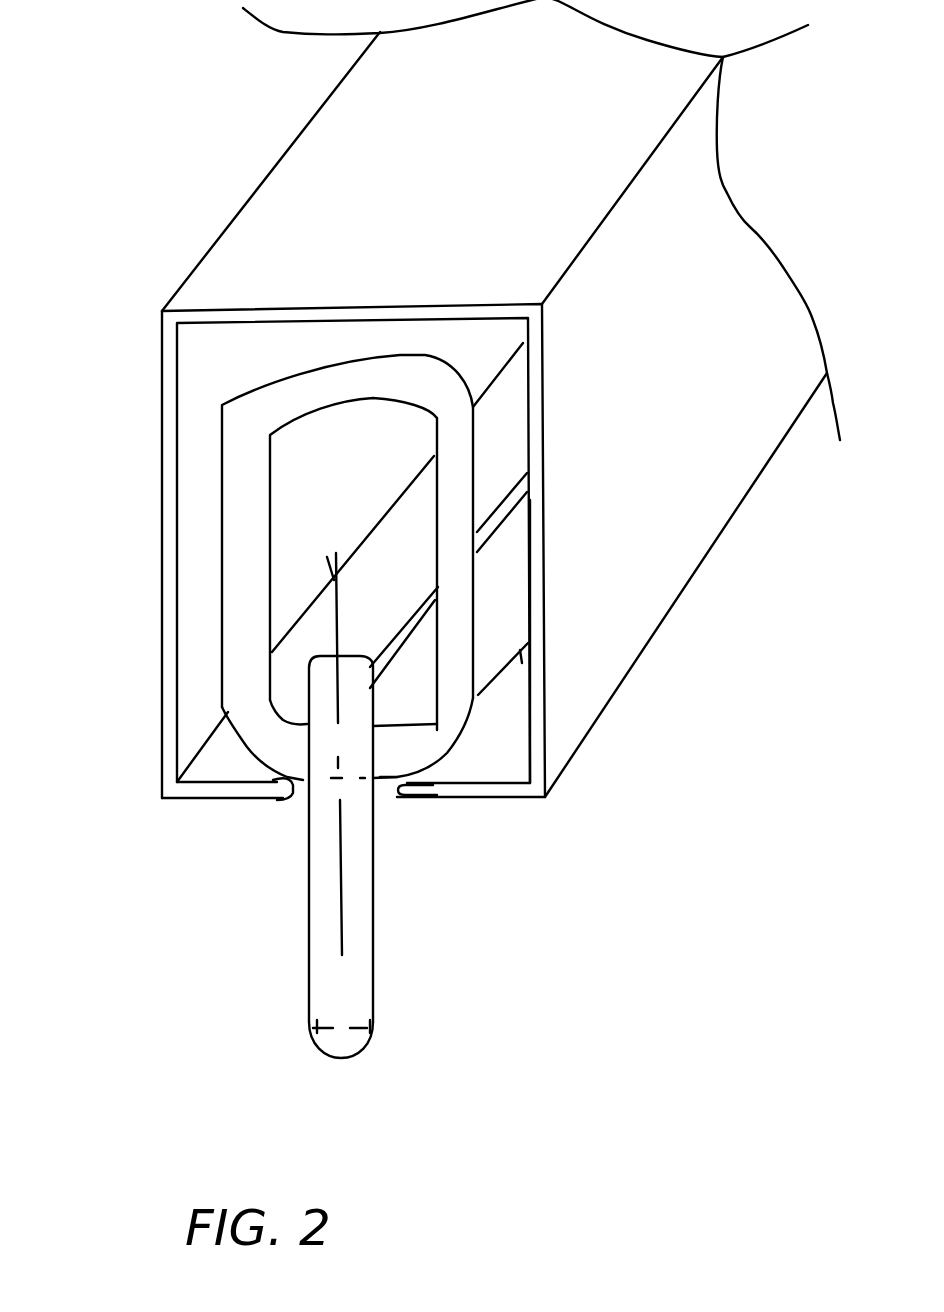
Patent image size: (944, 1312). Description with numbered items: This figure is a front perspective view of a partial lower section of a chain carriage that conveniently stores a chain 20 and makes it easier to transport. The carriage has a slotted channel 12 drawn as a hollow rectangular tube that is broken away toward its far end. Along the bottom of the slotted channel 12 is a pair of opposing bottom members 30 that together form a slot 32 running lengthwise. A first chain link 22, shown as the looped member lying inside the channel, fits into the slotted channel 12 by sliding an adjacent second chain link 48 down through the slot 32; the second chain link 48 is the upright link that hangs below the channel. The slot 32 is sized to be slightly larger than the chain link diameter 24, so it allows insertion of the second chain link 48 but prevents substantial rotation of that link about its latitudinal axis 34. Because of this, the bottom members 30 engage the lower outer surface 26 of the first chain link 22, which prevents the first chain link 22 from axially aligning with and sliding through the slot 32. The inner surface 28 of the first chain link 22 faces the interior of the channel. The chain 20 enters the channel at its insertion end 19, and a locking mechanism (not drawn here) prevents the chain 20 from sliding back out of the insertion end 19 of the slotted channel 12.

The slotted channel 12 is at (560, 773).
The insertion end 19 is at (545, 708).
The chain 20 is at (275, 907).
The first chain link 22 is at (233, 728).
The chain link diameter 24 is at (377, 1020).
The lower outer surface 26 is at (273, 780).
The inner surface 28 is at (263, 593).
The bottom members 30 is at (372, 618).
The slot 32 is at (400, 692).
The latitudinal axis 34 is at (343, 883).
The second chain link 48 is at (307, 1007).